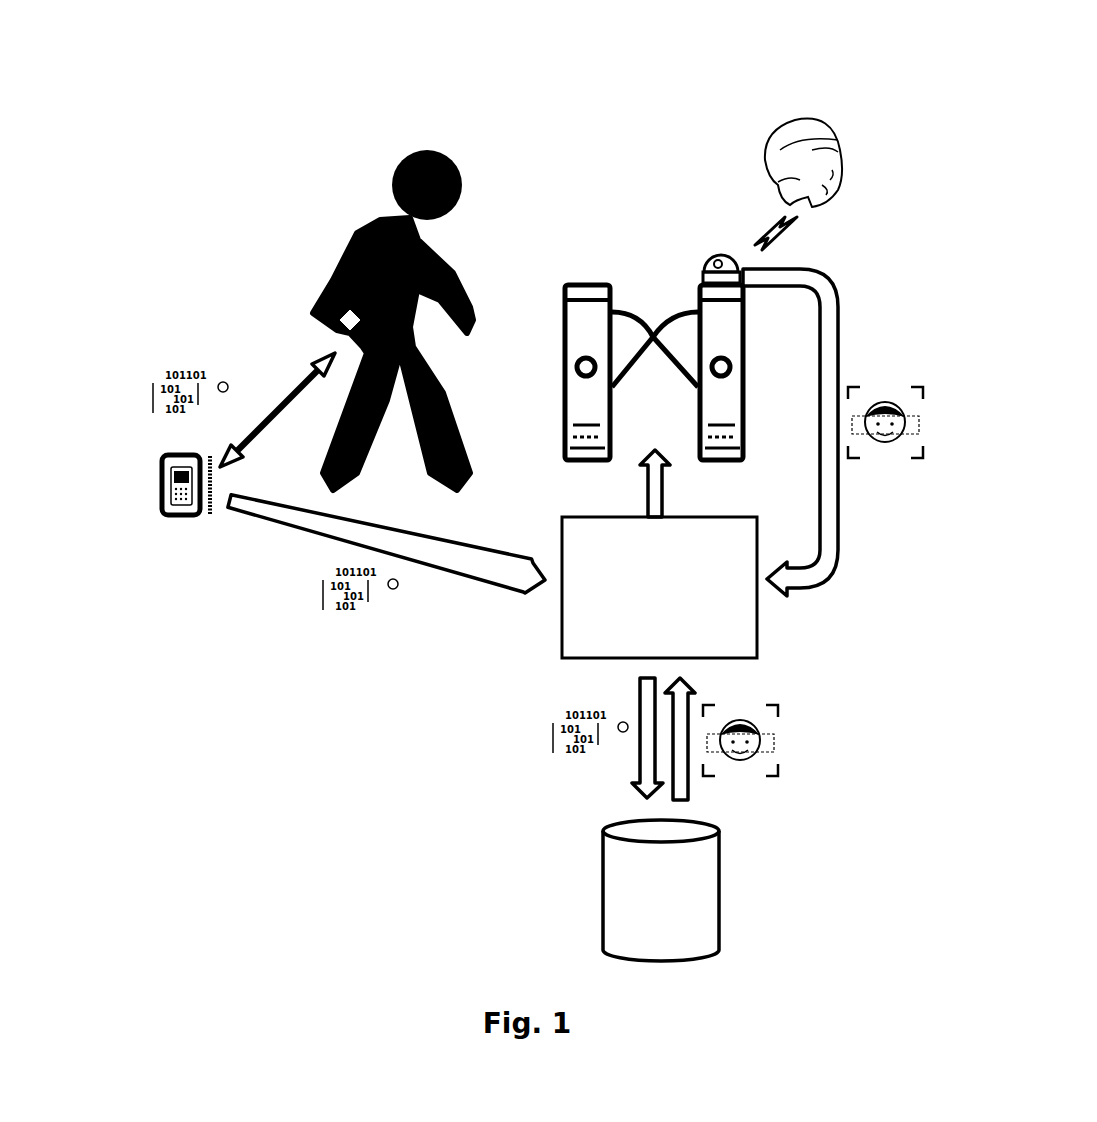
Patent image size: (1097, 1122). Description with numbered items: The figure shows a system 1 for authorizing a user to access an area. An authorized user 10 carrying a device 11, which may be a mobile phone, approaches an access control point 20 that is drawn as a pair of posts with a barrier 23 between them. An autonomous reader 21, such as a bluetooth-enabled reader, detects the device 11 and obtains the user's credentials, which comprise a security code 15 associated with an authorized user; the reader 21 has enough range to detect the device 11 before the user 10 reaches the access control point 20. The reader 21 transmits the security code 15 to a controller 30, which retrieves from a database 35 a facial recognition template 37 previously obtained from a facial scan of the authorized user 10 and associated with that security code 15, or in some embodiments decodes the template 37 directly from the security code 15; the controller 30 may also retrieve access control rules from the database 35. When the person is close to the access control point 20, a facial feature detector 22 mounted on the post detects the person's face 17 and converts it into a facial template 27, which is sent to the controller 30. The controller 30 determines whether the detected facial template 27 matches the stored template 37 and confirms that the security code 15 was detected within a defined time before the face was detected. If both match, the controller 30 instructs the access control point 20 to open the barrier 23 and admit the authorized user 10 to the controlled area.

The system 1 is at (353, 87).
The authorized user 10 is at (323, 257).
The device 11 is at (340, 340).
The security code 15 is at (140, 368).
The person's face 17 is at (755, 147).
The access control point 20 is at (583, 280).
The autonomous reader 21 is at (155, 482).
The facial feature detector 22 is at (702, 252).
The barrier 23 is at (653, 300).
The facial template 27 is at (942, 382).
The controller 30 is at (659, 587).
The database 35 is at (661, 890).
The facial recognition template 37 is at (795, 723).